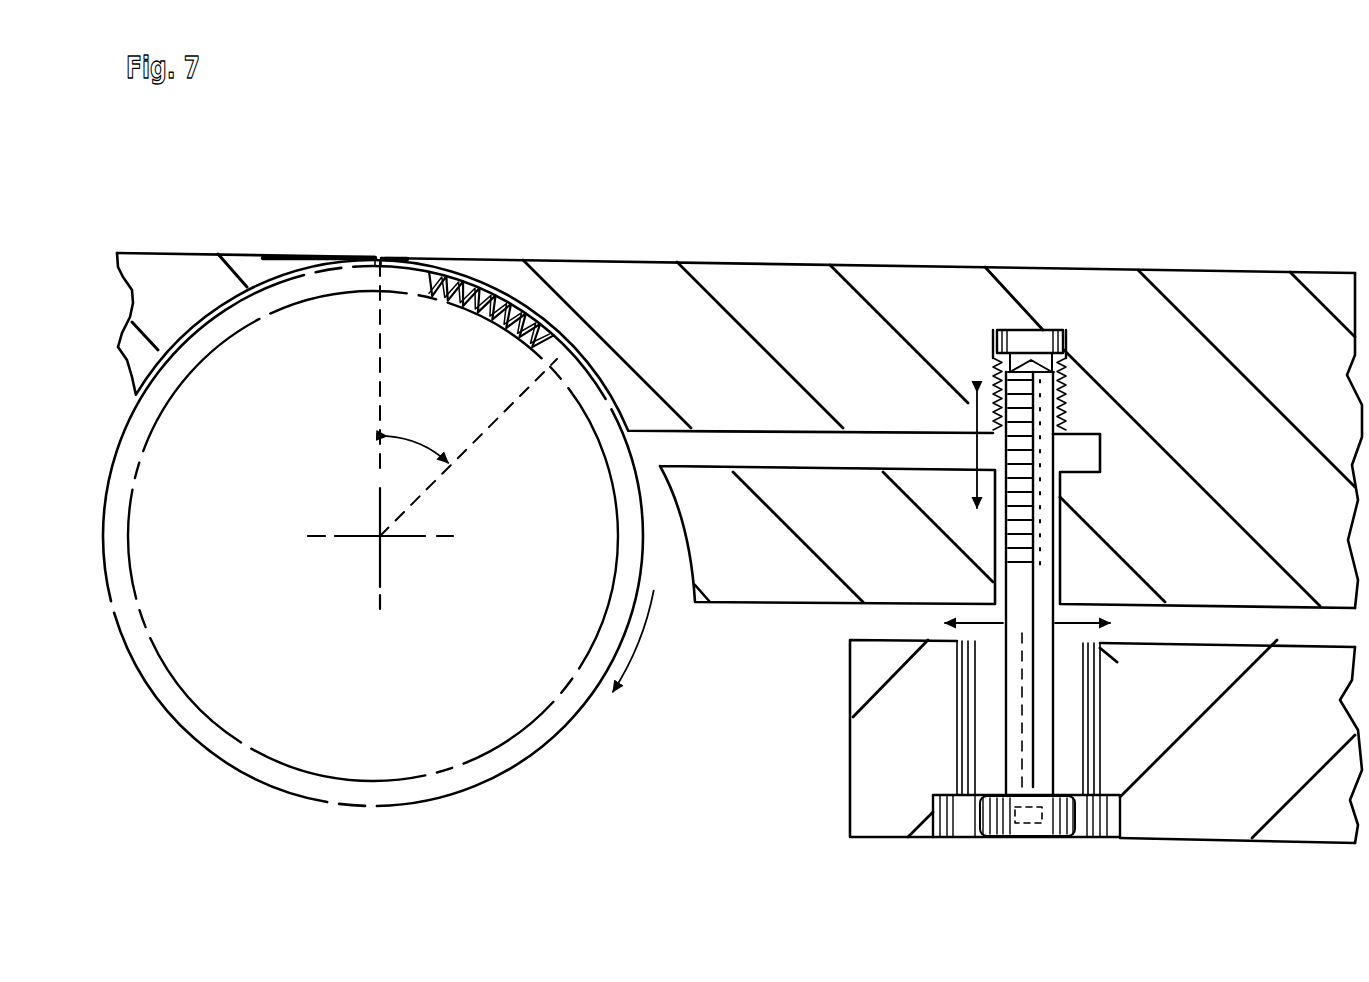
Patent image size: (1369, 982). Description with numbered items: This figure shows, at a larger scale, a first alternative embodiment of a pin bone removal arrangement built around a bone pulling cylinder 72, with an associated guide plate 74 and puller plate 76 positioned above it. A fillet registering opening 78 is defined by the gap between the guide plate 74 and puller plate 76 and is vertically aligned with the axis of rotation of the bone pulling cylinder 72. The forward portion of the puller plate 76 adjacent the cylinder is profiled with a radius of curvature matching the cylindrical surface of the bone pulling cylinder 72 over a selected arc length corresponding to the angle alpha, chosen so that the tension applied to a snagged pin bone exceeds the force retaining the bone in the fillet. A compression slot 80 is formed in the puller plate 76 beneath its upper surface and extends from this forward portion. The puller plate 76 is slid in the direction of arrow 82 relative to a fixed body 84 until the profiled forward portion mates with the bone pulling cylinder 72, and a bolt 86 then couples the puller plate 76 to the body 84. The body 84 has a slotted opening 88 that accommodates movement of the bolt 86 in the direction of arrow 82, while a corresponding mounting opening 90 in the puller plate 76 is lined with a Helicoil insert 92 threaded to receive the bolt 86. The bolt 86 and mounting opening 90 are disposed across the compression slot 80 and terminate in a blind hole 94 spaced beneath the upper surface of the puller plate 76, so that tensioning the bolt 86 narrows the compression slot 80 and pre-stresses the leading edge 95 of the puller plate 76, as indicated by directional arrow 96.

The bone pulling cylinder 72 is at (553, 752).
The guide plate 74 is at (232, 252).
The puller plate 76 is at (632, 258).
The fillet registering opening 78 is at (375, 252).
The compression slot 80 is at (748, 428).
The arrow 82 is at (1068, 625).
The fixed body 84 is at (1147, 843).
The bolt 86 is at (1053, 745).
The slotted opening 88 is at (957, 832).
The mounting opening 90 is at (1060, 587).
The Helicoil insert 92 is at (1060, 408).
The blind hole 94 is at (1030, 342).
The leading edge 95 is at (386, 258).
The directional arrow 96 is at (973, 457).